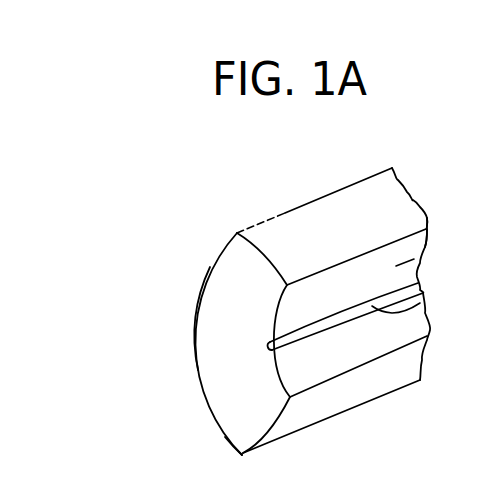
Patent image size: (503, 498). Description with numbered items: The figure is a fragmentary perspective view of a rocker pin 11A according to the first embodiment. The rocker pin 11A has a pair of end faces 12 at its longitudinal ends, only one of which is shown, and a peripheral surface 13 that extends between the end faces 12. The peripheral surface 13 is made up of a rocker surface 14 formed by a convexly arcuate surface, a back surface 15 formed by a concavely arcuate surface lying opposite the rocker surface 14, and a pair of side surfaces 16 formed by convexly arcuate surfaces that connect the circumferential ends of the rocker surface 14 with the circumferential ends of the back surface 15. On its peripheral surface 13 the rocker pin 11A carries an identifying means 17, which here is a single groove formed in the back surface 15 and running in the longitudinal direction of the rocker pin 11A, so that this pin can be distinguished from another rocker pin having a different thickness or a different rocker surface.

The rocker pin 11A is at (211, 262).
The end face 12 is at (229, 407).
The peripheral surface 13 is at (391, 200).
The rocker surface 14 is at (193, 345).
The back surface 15 is at (433, 237).
The side surface 16 is at (302, 243).
The identifying means 17 is at (425, 294).